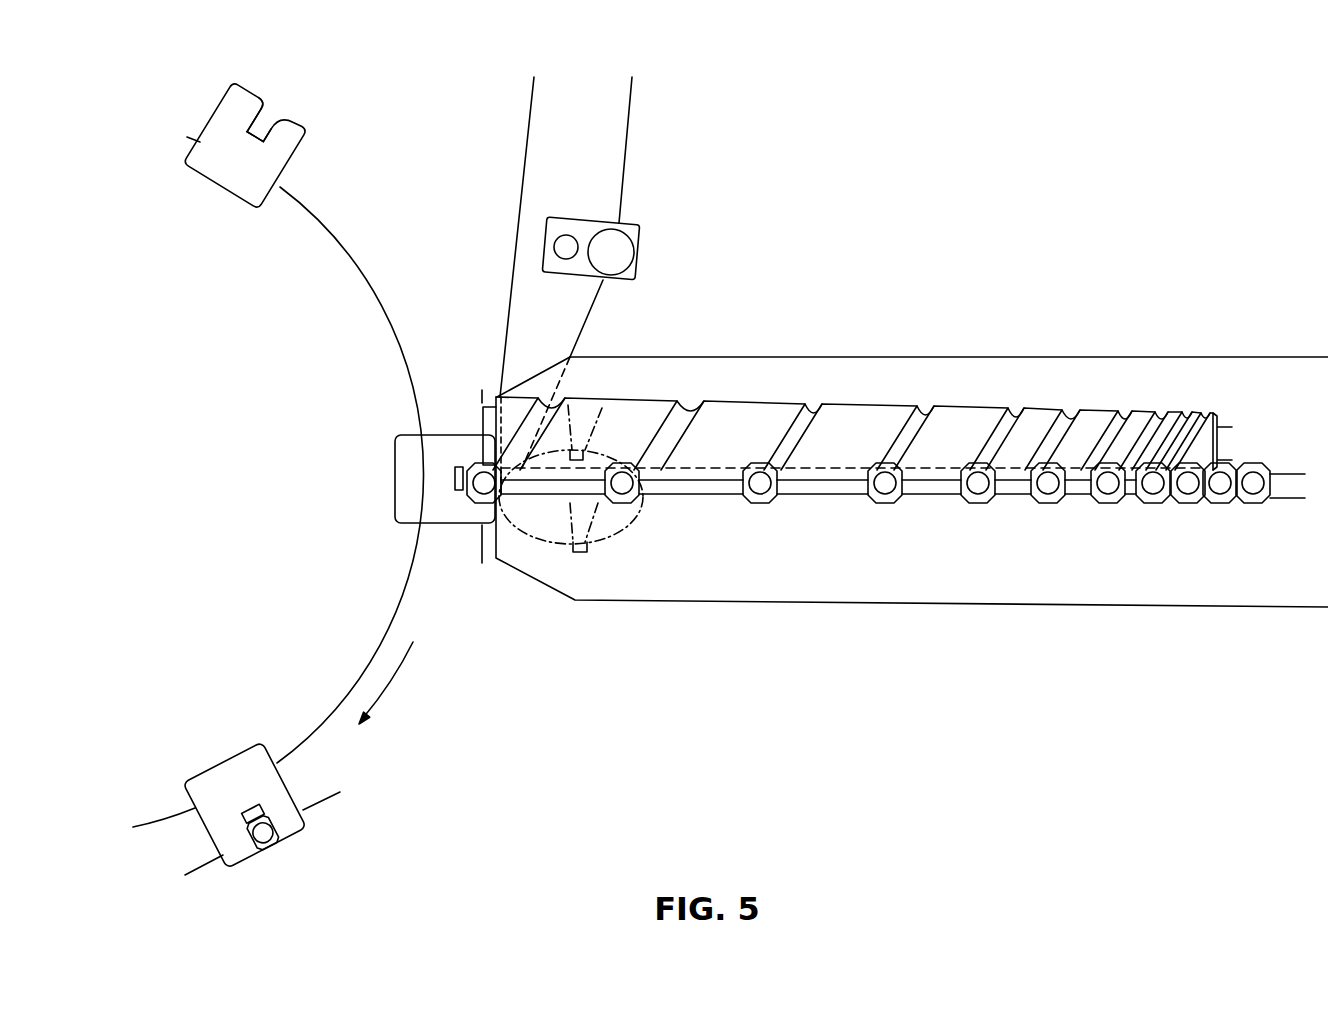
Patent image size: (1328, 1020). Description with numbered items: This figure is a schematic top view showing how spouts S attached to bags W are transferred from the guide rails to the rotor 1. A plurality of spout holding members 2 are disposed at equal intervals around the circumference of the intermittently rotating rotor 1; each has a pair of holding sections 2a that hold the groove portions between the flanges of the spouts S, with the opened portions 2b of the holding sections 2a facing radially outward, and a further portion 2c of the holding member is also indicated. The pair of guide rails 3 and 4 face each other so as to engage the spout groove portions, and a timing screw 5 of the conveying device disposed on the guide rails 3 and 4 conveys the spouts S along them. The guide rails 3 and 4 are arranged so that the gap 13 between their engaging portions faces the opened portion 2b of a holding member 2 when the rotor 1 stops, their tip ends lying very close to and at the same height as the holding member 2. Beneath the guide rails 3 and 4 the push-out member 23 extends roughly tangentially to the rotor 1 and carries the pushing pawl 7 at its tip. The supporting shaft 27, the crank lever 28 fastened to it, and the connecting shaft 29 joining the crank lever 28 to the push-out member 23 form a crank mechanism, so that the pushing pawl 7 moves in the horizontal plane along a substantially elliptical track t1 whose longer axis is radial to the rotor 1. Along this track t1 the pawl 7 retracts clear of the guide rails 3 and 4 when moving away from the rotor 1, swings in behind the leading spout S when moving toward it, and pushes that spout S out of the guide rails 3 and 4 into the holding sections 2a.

The rotor 1 is at (345, 283).
The spout holding member 2 is at (272, 165).
The holding section 2a is at (255, 120).
The opened portion 2b is at (270, 105).
The holder recess 2c is at (265, 120).
The guide rail 3 is at (1186, 372).
The guide rail 4 is at (1196, 582).
The timing screw 5 is at (858, 430).
The pushing pawl 7 is at (507, 478).
The gap 13 is at (838, 494).
The push-out member 23 is at (610, 167).
The supporting shaft 27 is at (625, 252).
The crank lever 28 is at (641, 232).
The connecting shaft 29 is at (555, 245).
The spout S is at (1153, 498).
The bag W is at (325, 805).
The elliptical track t1 is at (625, 533).